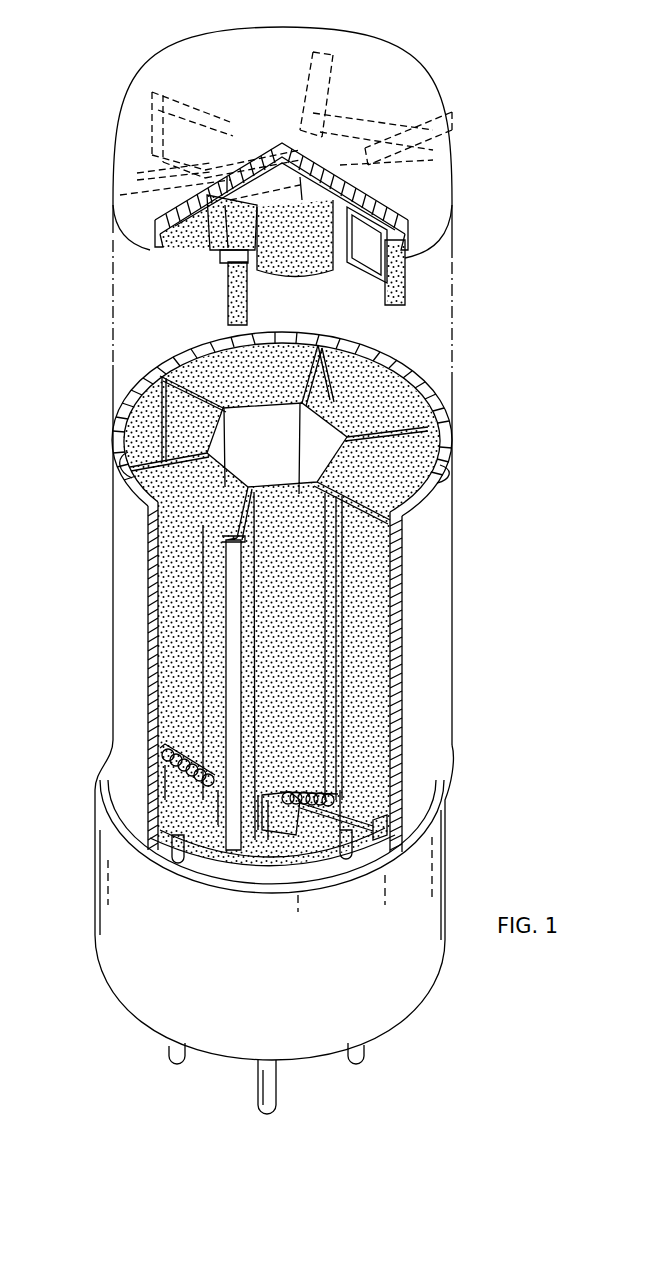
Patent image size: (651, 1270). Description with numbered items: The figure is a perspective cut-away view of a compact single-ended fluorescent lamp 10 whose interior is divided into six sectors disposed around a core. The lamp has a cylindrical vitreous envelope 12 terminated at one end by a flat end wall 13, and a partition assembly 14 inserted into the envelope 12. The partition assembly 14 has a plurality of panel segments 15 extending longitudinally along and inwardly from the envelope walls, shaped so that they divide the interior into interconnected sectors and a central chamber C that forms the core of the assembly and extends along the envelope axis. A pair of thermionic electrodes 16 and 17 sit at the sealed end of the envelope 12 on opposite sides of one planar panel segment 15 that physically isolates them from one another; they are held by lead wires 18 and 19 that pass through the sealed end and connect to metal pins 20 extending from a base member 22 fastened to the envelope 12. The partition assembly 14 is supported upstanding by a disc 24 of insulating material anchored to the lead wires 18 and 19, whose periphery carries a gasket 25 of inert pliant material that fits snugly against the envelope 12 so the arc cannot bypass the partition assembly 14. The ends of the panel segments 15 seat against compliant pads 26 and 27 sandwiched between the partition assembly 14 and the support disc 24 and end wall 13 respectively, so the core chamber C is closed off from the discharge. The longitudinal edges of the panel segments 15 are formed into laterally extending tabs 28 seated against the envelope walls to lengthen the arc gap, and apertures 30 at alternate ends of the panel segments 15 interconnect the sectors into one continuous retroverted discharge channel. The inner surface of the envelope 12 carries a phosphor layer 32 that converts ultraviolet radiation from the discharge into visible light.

The compact fluorescent lamp 10 is at (74, 128).
The vitreous envelope 12 is at (145, 238).
The end wall 13 is at (390, 68).
The partition assembly 14 is at (270, 618).
The panel segments 15 is at (140, 478).
The thermionic electrode 16 is at (168, 748).
The thermionic electrode 17 is at (297, 793).
The lead wire 18 is at (160, 783).
The lead wire 19 is at (290, 813).
The metal pins 20 is at (176, 1056).
The base member 22 is at (110, 920).
The disc 24 is at (293, 847).
The gasket 25 is at (177, 837).
The pad 26 is at (360, 817).
The pad 27 is at (230, 237).
The tabs 28 is at (246, 313).
The apertures 30 is at (380, 255).
The layer 32 is at (377, 390).
The central chamber C is at (258, 427).